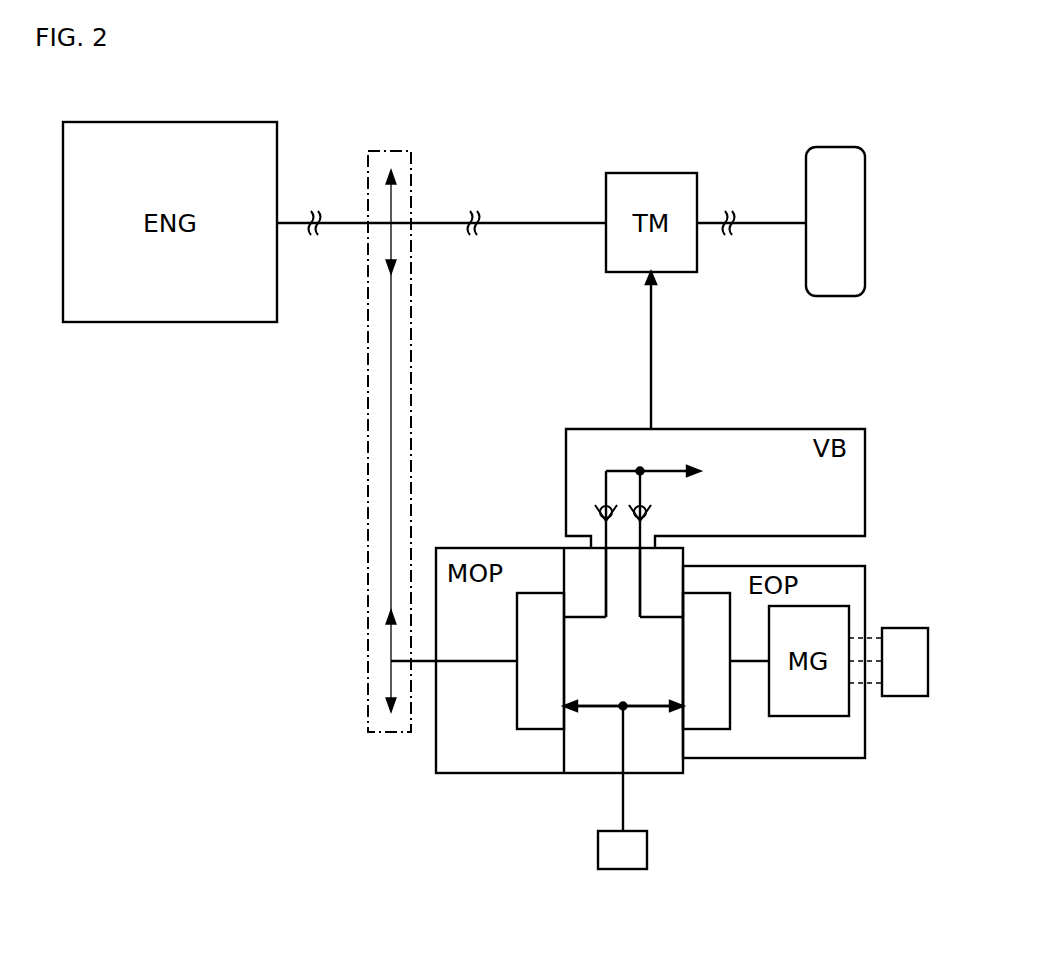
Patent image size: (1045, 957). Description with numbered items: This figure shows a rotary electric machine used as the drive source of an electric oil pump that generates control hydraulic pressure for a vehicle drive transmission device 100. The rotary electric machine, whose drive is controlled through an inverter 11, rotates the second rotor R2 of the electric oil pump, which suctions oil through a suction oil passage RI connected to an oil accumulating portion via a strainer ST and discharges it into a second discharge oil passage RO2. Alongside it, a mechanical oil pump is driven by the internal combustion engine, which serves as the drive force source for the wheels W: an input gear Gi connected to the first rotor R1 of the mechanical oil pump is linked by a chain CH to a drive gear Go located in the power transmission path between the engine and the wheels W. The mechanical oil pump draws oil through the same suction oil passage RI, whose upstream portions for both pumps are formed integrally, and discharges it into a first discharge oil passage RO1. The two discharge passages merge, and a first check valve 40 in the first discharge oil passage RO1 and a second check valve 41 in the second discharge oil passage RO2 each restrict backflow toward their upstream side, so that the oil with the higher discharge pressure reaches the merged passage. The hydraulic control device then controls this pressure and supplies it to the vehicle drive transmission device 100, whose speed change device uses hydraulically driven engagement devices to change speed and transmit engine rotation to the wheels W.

The vehicle drive transmission device 100 is at (650, 148).
The first check valve 40 is at (600, 506).
The second check valve 41 is at (645, 506).
The inverter 11 is at (905, 697).
The wheels W is at (866, 208).
The chain CH is at (390, 413).
The drive gear Go is at (393, 200).
The input gear Gi is at (390, 688).
The first rotor R1 is at (535, 722).
The second rotor R2 is at (713, 733).
The suction oil passage RI is at (625, 757).
The first discharge oil passage RO1 is at (606, 572).
The second discharge oil passage RO2 is at (641, 572).
The strainer ST is at (623, 870).